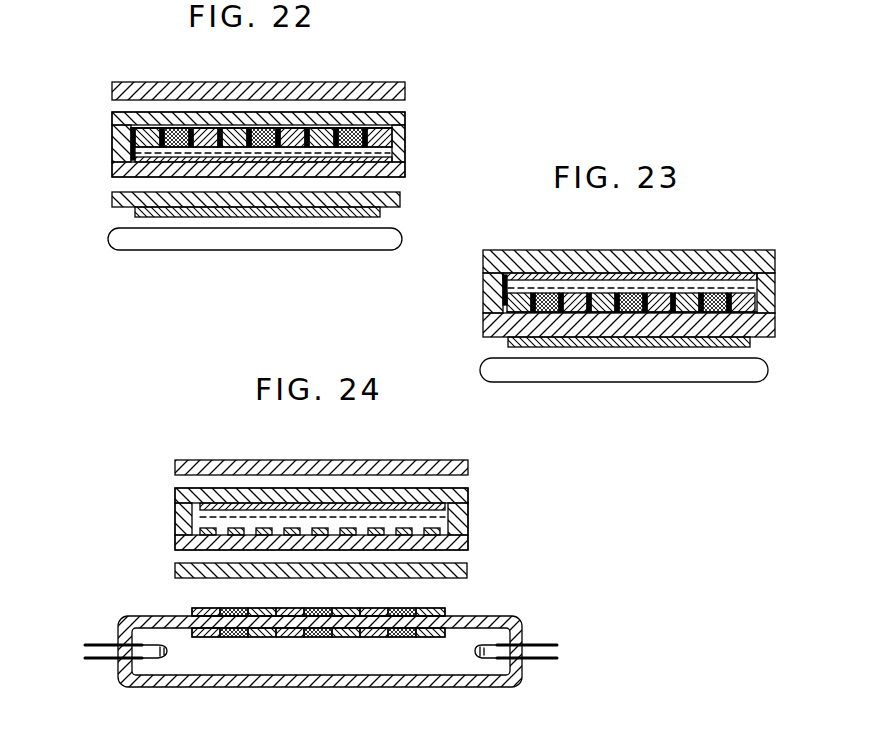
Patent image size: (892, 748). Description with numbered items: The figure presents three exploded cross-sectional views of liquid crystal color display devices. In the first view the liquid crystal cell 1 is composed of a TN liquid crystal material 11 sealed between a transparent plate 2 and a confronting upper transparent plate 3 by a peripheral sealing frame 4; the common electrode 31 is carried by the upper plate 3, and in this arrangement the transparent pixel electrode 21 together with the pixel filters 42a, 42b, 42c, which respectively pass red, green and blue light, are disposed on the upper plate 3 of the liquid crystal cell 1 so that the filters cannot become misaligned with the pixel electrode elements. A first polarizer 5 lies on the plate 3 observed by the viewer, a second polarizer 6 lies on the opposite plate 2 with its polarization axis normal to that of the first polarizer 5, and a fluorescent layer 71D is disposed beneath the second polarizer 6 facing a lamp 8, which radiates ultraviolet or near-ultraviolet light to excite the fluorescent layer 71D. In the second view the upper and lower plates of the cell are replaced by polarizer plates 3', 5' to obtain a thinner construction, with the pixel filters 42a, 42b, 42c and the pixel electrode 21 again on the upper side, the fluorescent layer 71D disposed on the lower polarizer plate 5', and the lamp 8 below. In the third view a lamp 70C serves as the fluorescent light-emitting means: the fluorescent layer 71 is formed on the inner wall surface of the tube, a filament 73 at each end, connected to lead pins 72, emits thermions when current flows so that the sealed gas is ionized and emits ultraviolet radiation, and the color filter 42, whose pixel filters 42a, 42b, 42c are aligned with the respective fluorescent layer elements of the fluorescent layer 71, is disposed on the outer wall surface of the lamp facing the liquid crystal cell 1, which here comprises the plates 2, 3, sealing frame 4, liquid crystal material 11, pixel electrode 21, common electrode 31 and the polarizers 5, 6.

In FIG. 22, the liquid crystal cell 1 is at (458, 112).
In FIG. 24, the liquid crystal cell 1 is at (510, 488).
In FIG. 22, the transparent plate 2 is at (405, 170).
In FIG. 24, the transparent plate 2 is at (468, 543).
In FIG. 22, the transparent plate 3 is at (276, 121).
In FIG. 24, the transparent plate 3 is at (337, 492).
In FIG. 23, the polarizer plate 3' is at (648, 259).
In FIG. 22, the peripheral sealing frame 4 is at (112, 132).
In FIG. 23, the peripheral sealing frame 4 is at (507, 275).
In FIG. 24, the peripheral sealing frame 4 is at (175, 510).
In FIG. 22, the first polarizer 5 is at (276, 83).
In FIG. 24, the first polarizer 5 is at (343, 456).
In FIG. 23, the polarizer plate 5' is at (648, 322).
In FIG. 22, the second polarizer 6 is at (400, 200).
In FIG. 24, the second polarizer 6 is at (321, 570).
In FIG. 22, the lamp 8 is at (396, 242).
In FIG. 23, the lamp 8 is at (768, 374).
In FIG. 22, the TN liquid crystal material 11 is at (390, 140).
In FIG. 23, the TN liquid crystal material 11 is at (750, 290).
In FIG. 24, the TN liquid crystal material 11 is at (440, 517).
In FIG. 22, the transparent pixel electrode 21 is at (122, 122).
In FIG. 23, the transparent pixel electrode 21 is at (497, 338).
In FIG. 24, the transparent pixel electrode 21 is at (205, 530).
In FIG. 22, the common electrode 31 is at (165, 158).
In FIG. 23, the common electrode 31 is at (530, 280).
In FIG. 24, the common electrode 31 is at (200, 505).
In FIG. 24, the color filter 42 is at (108, 555).
In FIG. 22, the filter elements 42a is at (137, 139).
In FIG. 23, the filter elements 42a is at (515, 296).
In FIG. 24, the filter elements 42a is at (198, 608).
In FIG. 22, the filter elements 42b is at (135, 150).
In FIG. 23, the filter elements 42b is at (512, 288).
In FIG. 24, the filter elements 42b is at (233, 610).
In FIG. 22, the filter elements 42c is at (150, 152).
In FIG. 23, the filter elements 42c is at (504, 284).
In FIG. 24, the filter elements 42c is at (255, 610).
In FIG. 24, the fluorescent layer 71 is at (334, 642).
In FIG. 22, the fluorescent layer 71D is at (380, 213).
In FIG. 23, the fluorescent layer 71D is at (750, 342).
In FIG. 24, the lamp electrode lead 72 is at (518, 618).
In FIG. 24, the filament 73 is at (482, 660).
In FIG. 24, the lamp 70C is at (548, 683).